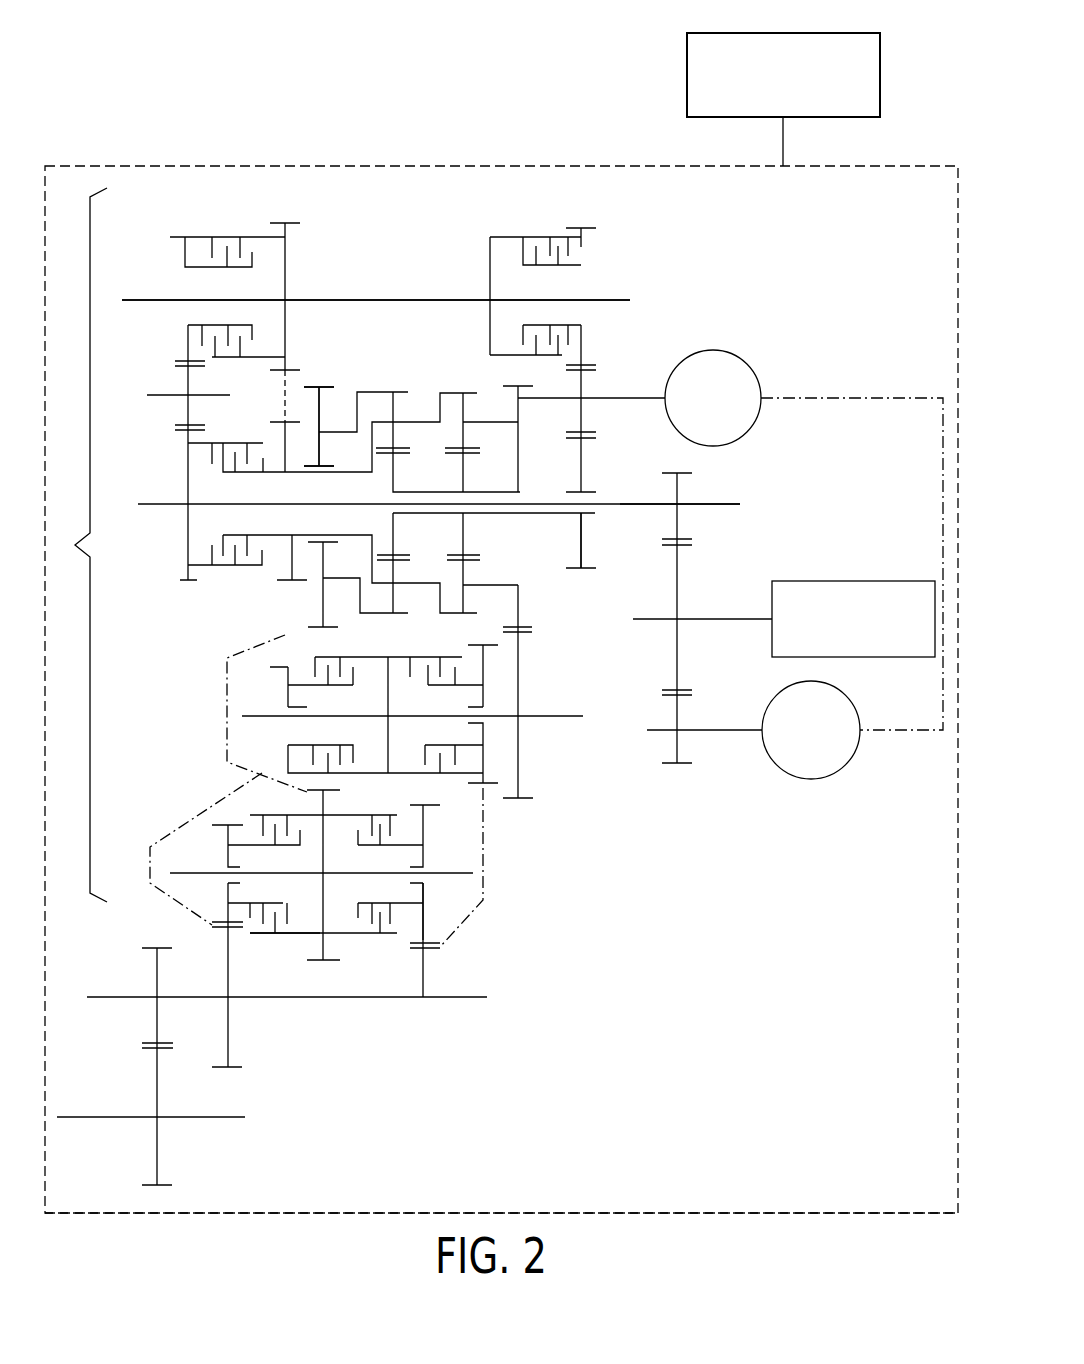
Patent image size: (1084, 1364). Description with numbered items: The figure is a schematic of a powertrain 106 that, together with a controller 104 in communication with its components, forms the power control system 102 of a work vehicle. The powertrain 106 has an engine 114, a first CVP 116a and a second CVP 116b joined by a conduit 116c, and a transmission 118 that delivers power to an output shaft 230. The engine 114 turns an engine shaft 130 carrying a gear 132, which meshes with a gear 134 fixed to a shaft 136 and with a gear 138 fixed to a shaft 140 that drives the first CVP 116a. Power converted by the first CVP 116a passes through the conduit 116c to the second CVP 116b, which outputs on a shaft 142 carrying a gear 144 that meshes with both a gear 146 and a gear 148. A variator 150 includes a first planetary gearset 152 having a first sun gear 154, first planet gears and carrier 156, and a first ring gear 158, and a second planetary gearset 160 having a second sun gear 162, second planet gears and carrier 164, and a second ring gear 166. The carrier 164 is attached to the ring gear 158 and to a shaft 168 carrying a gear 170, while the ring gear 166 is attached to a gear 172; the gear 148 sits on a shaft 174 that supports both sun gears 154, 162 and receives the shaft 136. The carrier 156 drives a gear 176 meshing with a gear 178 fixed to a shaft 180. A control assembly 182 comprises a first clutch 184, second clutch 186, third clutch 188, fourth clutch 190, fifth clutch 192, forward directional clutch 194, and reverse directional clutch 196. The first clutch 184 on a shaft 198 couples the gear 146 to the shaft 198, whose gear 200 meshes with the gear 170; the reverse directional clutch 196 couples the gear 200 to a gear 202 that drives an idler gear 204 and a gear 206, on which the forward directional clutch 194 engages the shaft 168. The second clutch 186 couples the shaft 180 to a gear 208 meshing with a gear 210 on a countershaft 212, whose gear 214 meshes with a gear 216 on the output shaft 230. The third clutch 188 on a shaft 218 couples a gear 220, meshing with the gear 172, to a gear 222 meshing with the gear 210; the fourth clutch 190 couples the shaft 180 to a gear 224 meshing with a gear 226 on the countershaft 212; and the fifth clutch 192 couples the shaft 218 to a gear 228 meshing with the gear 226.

The power control system 102 is at (477, 112).
The controller 104 is at (880, 53).
The powertrain 106 is at (797, 1222).
The engine 114 is at (893, 580).
The first CVP 116a is at (847, 763).
The second CVP 116b is at (748, 362).
The conduit 116c is at (855, 397).
The transmission 118 is at (338, 200).
The engine shaft 130 is at (757, 622).
The gear 132 is at (680, 604).
The gear 134 is at (680, 493).
The shaft 136 is at (708, 503).
The gear 138 is at (673, 745).
The shaft 140 is at (700, 727).
The shaft 142 is at (603, 396).
The gear 144 is at (585, 413).
The gear 146 is at (583, 243).
The gear 148 is at (583, 545).
The variator 150 is at (367, 372).
The first planetary gearset 152 is at (460, 378).
The first sun gear 154 is at (465, 470).
The first planet gears and associated carrier 156 is at (465, 432).
The first ring gear 158 is at (468, 385).
The second planetary gearset 160 is at (382, 327).
The second sun gear 162 is at (393, 473).
The second planet gears and associated carrier 164 is at (395, 427).
The second ring gear 166 is at (393, 387).
The shaft 168 is at (298, 535).
The gear 170 is at (292, 558).
The gear 172 is at (323, 607).
The shaft 174 is at (551, 513).
The gear 176 is at (581, 570).
The gear 178 is at (518, 695).
The shaft 180 is at (542, 716).
The control assembly 182 is at (75, 545).
The first clutch 184 is at (525, 237).
The second clutch 186 is at (375, 657).
The third clutch 188 is at (290, 935).
The fourth clutch 190 is at (397, 657).
The fifth clutch 192 is at (362, 937).
The forward directional clutch 194 is at (223, 443).
The reverse directional clutch 196 is at (228, 237).
The shaft 198 is at (347, 300).
The gear 200 is at (287, 281).
The gear 202 is at (189, 335).
The idler gear 204 is at (176, 373).
The gear 206 is at (186, 492).
The gear 208 is at (287, 673).
The gear 210 is at (227, 968).
The countershaft 212 is at (288, 1000).
The gear 214 is at (157, 975).
The gear 216 is at (153, 1092).
The shaft 218 is at (442, 872).
The gear 220 is at (322, 838).
The gear 222 is at (227, 835).
The gear 224 is at (487, 770).
The gear 226 is at (428, 970).
The gear 228 is at (428, 925).
The output shaft 230 is at (197, 1118).